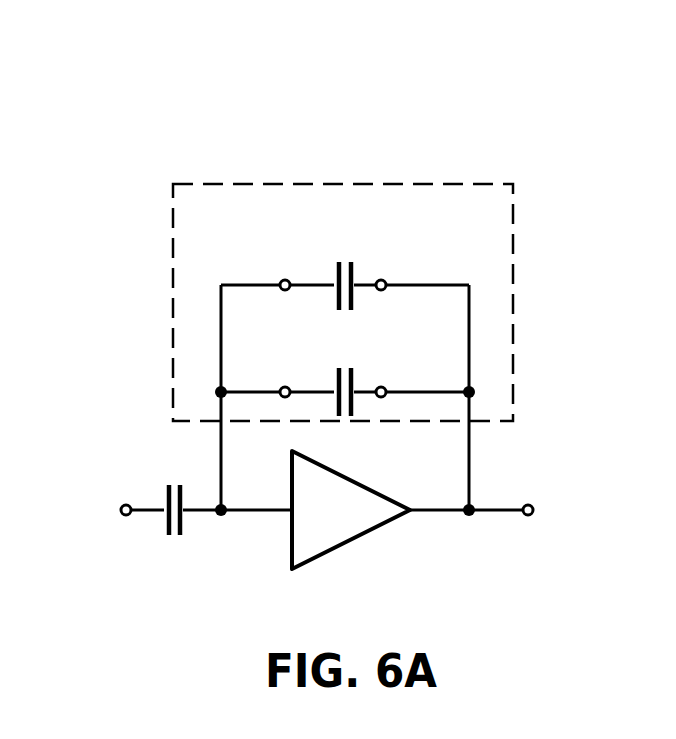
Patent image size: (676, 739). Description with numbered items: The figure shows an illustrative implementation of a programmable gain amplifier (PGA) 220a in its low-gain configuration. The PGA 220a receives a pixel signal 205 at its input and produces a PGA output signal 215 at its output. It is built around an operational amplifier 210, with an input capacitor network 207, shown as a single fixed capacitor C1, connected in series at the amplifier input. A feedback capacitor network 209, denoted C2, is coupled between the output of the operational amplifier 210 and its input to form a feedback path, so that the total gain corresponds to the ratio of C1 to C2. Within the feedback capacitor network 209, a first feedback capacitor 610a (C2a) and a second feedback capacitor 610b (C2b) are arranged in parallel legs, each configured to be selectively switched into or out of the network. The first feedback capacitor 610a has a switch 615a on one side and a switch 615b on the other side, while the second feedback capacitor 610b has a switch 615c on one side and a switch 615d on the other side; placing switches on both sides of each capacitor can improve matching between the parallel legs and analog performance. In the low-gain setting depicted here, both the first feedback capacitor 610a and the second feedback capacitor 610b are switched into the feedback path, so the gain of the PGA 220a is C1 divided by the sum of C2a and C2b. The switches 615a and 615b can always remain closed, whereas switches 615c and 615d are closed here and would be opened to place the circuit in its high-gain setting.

The programmable gain amplifier in low-gain configuration 220a is at (149, 100).
The feedback capacitor network 209 is at (300, 185).
The pixel signal 205 is at (99, 510).
The input capacitor network 207 is at (173, 495).
The operational amplifier 210 is at (351, 510).
The PGA output signal 215 is at (555, 510).
The first feedback capacitor 610a is at (343, 375).
The second feedback capacitor 610b is at (343, 269).
The switch 615a is at (300, 388).
The switch 615b is at (392, 389).
The switch 615c is at (293, 282).
The switch 615d is at (392, 282).